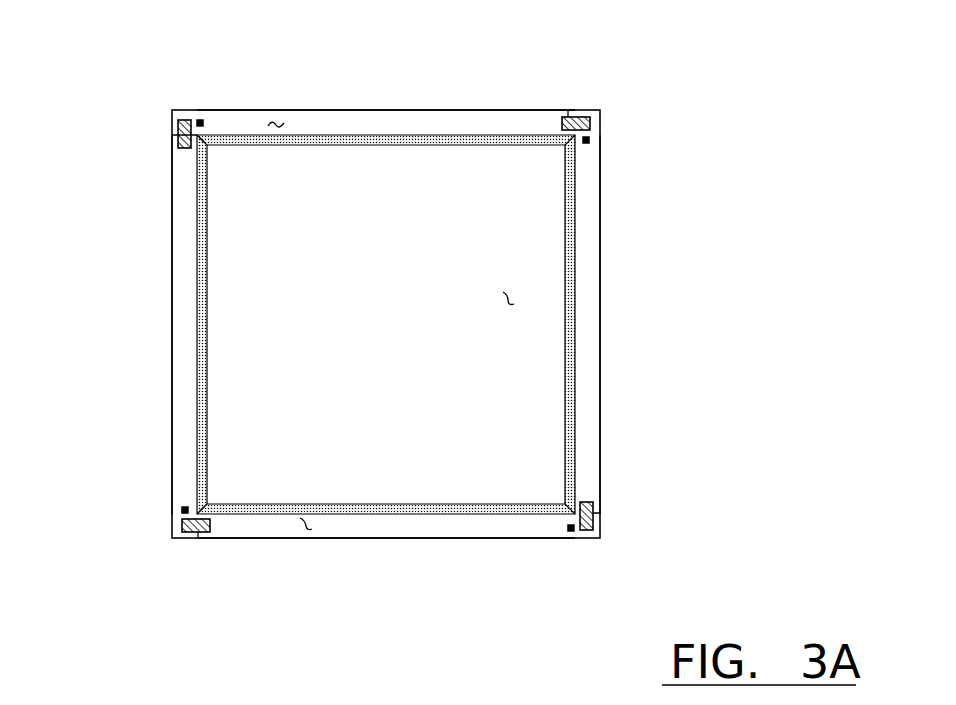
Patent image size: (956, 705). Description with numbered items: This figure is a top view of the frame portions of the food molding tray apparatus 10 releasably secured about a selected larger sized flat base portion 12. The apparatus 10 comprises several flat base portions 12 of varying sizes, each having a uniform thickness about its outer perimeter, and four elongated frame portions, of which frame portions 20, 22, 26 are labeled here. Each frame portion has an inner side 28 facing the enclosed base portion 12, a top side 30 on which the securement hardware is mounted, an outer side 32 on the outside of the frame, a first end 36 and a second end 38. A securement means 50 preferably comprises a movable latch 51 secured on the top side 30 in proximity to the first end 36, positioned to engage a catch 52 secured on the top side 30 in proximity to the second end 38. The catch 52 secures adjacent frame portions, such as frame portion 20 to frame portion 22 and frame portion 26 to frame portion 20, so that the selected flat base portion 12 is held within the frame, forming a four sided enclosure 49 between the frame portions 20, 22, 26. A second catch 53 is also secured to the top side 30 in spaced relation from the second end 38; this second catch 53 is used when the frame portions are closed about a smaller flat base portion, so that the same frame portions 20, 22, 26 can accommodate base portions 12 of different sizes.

The food molding tray apparatus 10 is at (628, 353).
The flat base portion 12 is at (506, 298).
The frame portion 20 is at (172, 332).
The frame portion 22 is at (355, 110).
The frame portion 26 is at (373, 540).
The inner side 28 is at (348, 143).
The top side 30 is at (273, 122).
The outer side 32 is at (436, 110).
The first end 36 is at (208, 147).
The second end 38 is at (172, 125).
The four sided enclosure 49 is at (268, 342).
The securement means 50 is at (568, 110).
The movable latch 51 is at (396, 310).
The catch 52 is at (184, 118).
The second catch 53 is at (203, 119).